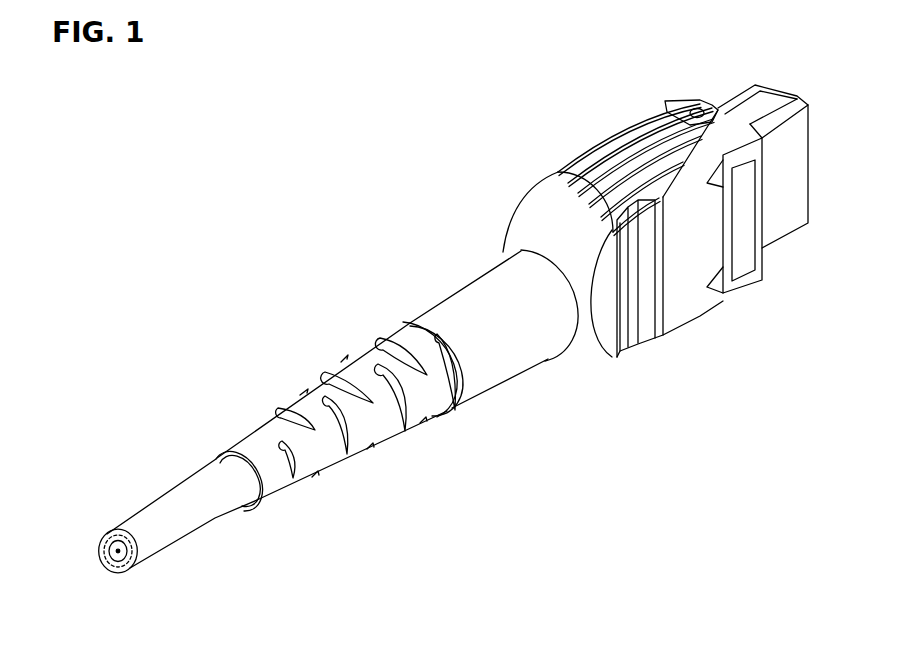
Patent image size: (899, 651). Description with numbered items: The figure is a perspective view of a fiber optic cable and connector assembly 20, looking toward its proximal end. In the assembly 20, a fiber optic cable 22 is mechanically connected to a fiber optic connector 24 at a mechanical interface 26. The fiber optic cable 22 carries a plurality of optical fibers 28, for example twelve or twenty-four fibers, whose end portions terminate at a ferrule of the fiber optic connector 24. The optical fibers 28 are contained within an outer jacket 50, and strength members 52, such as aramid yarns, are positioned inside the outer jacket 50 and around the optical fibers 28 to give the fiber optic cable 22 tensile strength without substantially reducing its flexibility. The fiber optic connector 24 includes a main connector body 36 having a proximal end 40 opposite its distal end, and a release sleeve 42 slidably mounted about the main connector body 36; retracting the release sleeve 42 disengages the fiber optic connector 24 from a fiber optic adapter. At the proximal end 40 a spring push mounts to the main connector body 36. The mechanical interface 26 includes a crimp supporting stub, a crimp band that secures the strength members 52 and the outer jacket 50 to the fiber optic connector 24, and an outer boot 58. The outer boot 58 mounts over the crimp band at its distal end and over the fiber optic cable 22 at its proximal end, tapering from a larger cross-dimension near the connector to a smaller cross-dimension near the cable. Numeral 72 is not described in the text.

The fiber optic cable and connector assembly 20 is at (353, 270).
The fiber optic cable 22 is at (740, 650).
The fiber optic connector 24 is at (663, 103).
The mechanical interface 26 is at (490, 232).
The optical fibers 28 is at (115, 552).
The main connector body 36 is at (760, 281).
The proximal end 40 is at (638, 347).
The release sleeve 42 is at (607, 143).
The outer jacket 50 is at (130, 570).
The strength members 52 is at (100, 545).
The outer boot 58 is at (467, 403).
The fiber optic cable 72 is at (180, 478).